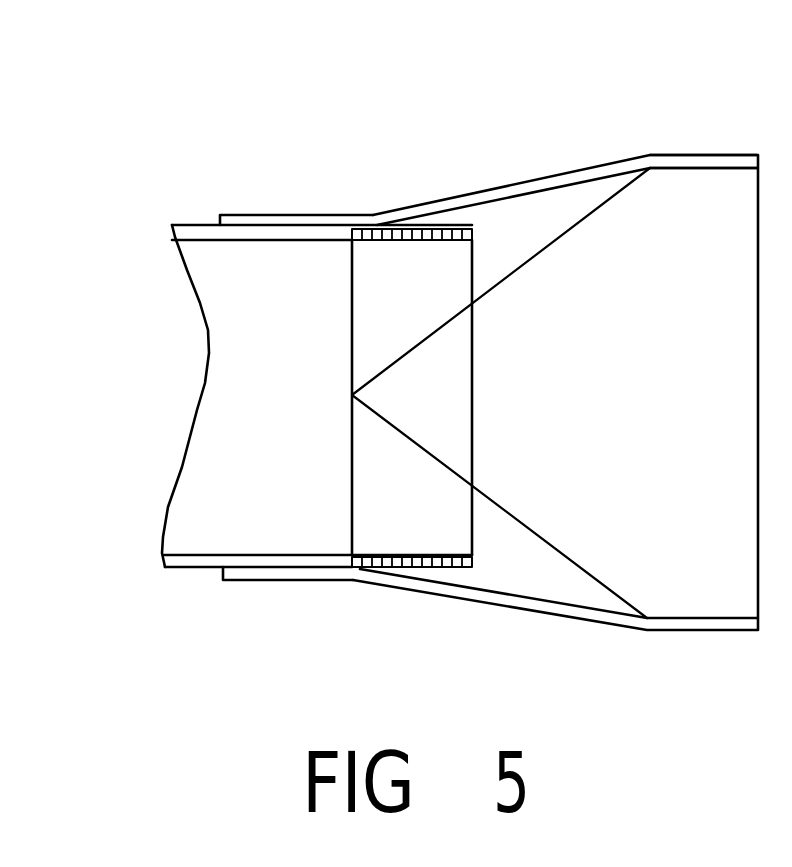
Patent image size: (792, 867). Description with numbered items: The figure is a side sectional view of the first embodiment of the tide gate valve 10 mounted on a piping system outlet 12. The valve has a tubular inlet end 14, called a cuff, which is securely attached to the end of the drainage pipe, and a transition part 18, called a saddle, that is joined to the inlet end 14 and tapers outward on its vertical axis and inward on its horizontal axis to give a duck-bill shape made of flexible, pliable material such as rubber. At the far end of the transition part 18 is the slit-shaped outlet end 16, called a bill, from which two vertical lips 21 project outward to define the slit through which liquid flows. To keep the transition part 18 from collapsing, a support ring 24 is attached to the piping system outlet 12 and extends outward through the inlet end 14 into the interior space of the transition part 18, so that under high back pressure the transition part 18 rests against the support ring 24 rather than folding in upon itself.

The tide gate valve 10 is at (412, 192).
The piping system outlet 12 is at (207, 222).
The inlet end 14 is at (282, 581).
The outlet end 16 is at (697, 632).
The transition part 18 is at (500, 606).
The vertical lips 21 is at (692, 220).
The support ring 24 is at (453, 216).